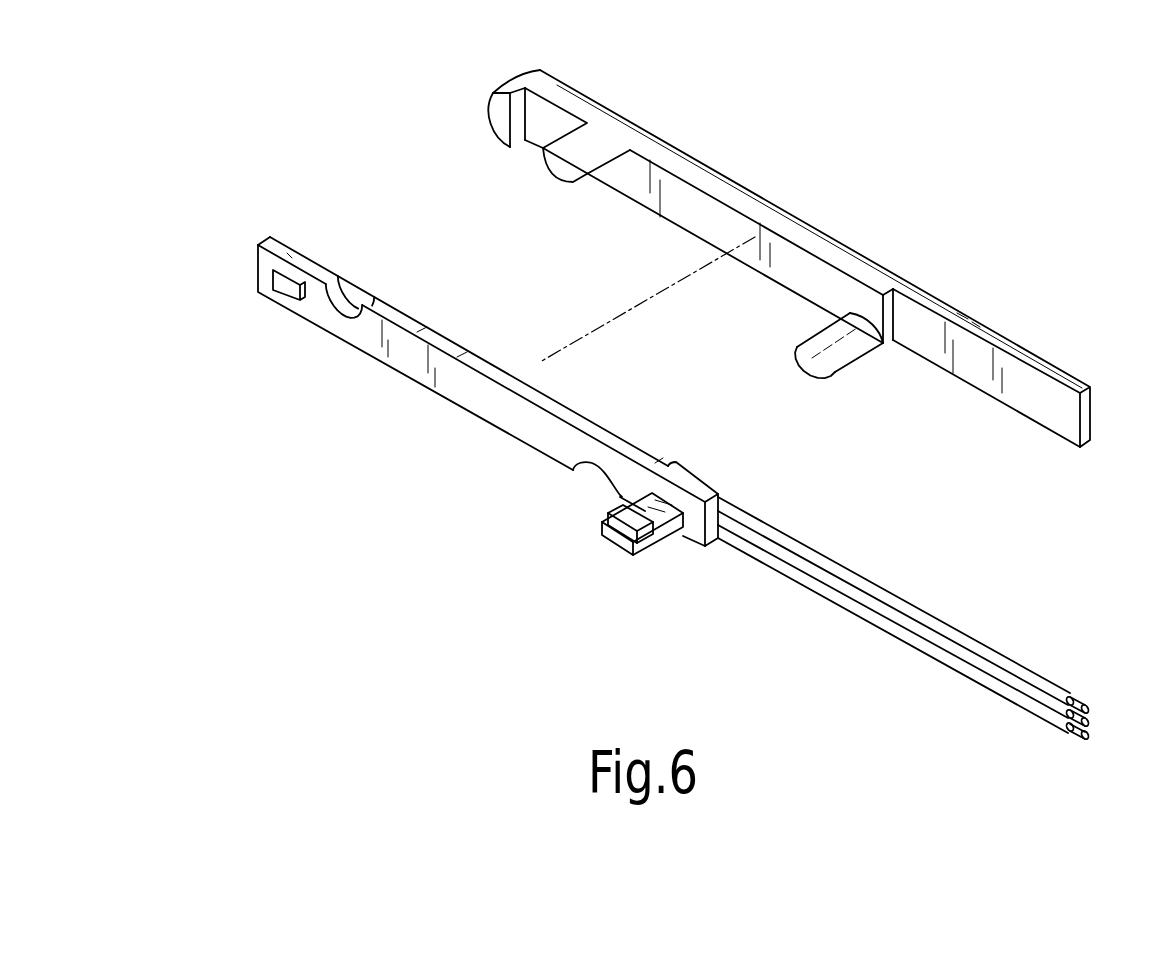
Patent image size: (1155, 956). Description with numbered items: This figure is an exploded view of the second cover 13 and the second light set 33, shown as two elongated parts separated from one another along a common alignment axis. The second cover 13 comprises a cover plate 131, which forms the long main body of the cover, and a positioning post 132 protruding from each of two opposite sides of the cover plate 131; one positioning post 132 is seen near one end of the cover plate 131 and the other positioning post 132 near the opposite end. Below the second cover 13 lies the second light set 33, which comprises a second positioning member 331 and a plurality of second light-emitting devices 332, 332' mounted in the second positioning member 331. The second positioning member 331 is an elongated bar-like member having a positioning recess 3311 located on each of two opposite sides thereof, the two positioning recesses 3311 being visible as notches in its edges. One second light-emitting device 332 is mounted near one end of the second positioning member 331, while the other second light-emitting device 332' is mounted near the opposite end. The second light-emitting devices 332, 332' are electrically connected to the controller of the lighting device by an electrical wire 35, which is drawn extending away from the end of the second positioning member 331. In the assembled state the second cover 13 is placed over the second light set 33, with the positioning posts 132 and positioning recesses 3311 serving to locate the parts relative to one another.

The second cover 13 is at (772, 258).
The cover plate 131 is at (712, 183).
The positioning post 132 is at (563, 170).
The second light set 33 is at (433, 422).
The second positioning member 331 is at (387, 347).
The positioning recess 3311 is at (347, 300).
The second light-emitting device 332 is at (226, 314).
The second light-emitting device 332' is at (584, 550).
The electrical wire 35 is at (932, 617).